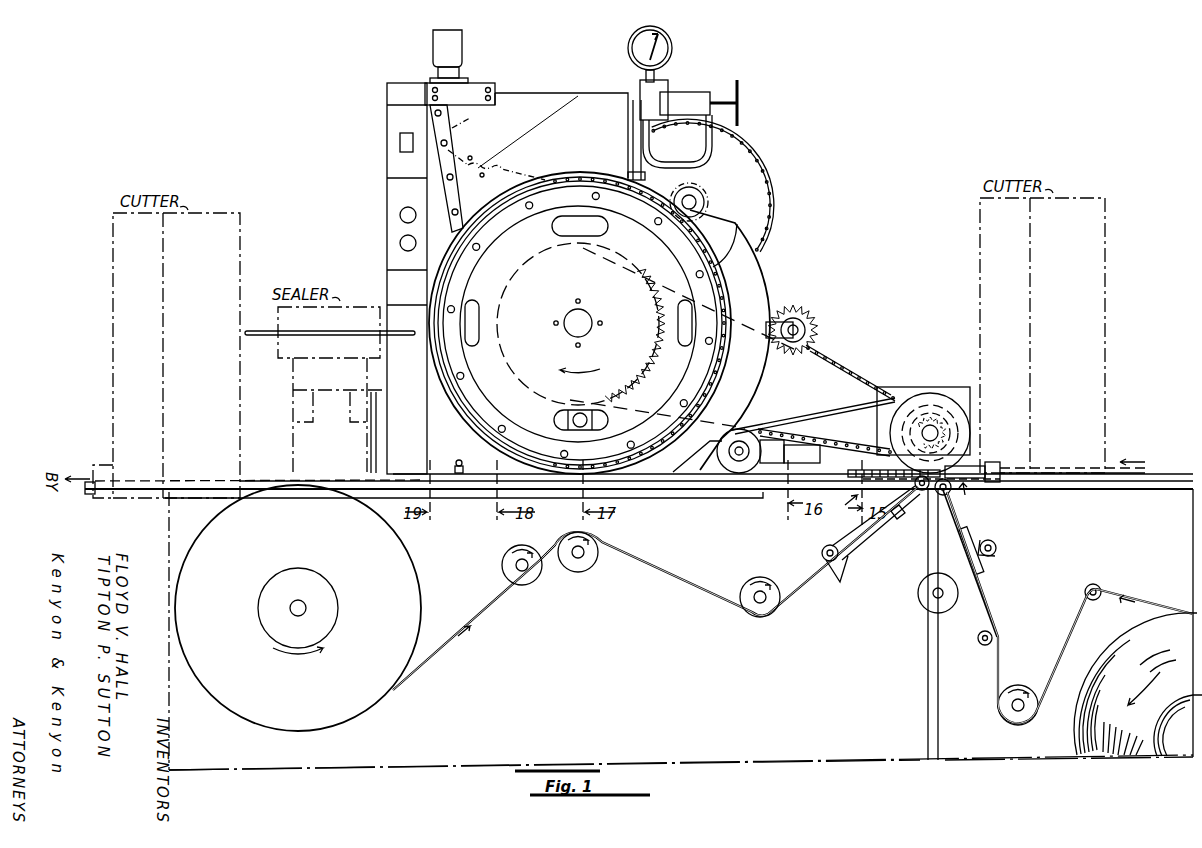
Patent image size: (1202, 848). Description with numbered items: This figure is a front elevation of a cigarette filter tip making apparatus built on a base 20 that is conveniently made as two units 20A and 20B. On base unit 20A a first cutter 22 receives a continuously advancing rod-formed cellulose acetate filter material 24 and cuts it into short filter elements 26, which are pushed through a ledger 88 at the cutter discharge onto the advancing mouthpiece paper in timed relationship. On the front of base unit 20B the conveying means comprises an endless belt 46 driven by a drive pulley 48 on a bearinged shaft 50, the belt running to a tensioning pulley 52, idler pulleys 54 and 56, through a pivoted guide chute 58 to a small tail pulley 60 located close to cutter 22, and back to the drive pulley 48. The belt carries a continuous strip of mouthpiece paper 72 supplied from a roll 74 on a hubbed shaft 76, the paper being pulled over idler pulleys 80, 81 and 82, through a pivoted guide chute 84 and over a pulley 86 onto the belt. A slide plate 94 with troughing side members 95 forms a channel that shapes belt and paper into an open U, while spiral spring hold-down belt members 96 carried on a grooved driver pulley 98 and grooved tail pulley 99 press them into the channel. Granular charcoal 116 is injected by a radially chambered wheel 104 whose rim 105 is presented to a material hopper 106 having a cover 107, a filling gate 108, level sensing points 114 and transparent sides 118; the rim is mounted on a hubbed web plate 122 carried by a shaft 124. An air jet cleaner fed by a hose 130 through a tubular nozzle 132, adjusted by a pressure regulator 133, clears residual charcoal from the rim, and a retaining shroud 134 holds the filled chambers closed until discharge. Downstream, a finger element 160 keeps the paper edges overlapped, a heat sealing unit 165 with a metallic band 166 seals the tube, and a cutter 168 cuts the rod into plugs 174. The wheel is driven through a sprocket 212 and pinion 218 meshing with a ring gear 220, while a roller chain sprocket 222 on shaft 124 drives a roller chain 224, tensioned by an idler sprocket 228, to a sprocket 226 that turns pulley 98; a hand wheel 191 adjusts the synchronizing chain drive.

The base 20 is at (1160, 470).
The base unit 20A is at (1069, 634).
The base unit 20B is at (544, 640).
The first cutter 22 is at (1094, 241).
The rod-formed cellulose acetate filter material 24 is at (1154, 455).
The filter elements 26 is at (890, 482).
The endless belt 46 is at (688, 582).
The drive pulley 48 is at (298, 608).
The bearinged shaft 50 is at (306, 609).
The tensioning pulley 52 is at (508, 574).
The idler pulley 54 is at (584, 566).
The idler pulley 56 is at (766, 582).
The pivoted guide chute 58 is at (837, 565).
The tail pulley 60 is at (922, 492).
The mouthpiece paper 72 is at (991, 600).
The roll 74 is at (1135, 684).
The hubbed shaft 76 is at (1186, 736).
The idler pulley 80 is at (1098, 594).
The idler pulley 81 is at (1000, 704).
The idler pulley 82 is at (980, 640).
The pivoted guide chute 84 is at (996, 548).
The pulley 86 is at (942, 496).
The ledger 88 is at (992, 461).
The slide plate 94 is at (684, 488).
The troughing side member 95 is at (828, 471).
The hold-down belt members 96 is at (801, 413).
The grooved driver pulley 98 is at (932, 396).
The grooved tail pulley 99 is at (740, 434).
The wheel 104 is at (443, 428).
The rim 105 is at (463, 384).
The material hopper 106 is at (552, 83).
The cover 107 is at (574, 84).
The filling gate 108 is at (462, 46).
The level sensing points 114 is at (487, 153).
The granular charcoal 116 is at (464, 142).
The sides 118 is at (528, 86).
The hubbed web plate 122 is at (614, 323).
The shaft 124 is at (588, 319).
The hose 130 is at (712, 156).
The tubular nozzle 132 is at (611, 160).
The pressure regulator 133 is at (695, 94).
The retaining shroud 134 is at (763, 268).
The finger element 160 is at (455, 468).
The heat sealing unit 165 is at (353, 308).
The metallic band 166 is at (272, 333).
The cutter 168 is at (238, 216).
The plug 174 is at (112, 482).
The hand wheel 191 is at (928, 604).
The sprocket 212 is at (713, 201).
The pinion 218 is at (702, 204).
The ring gear 220 is at (715, 267).
The roller chain sprocket 222 is at (655, 361).
The roller chain 224 is at (828, 362).
The sprocket 226 is at (900, 419).
The idler sprocket 228 is at (800, 310).